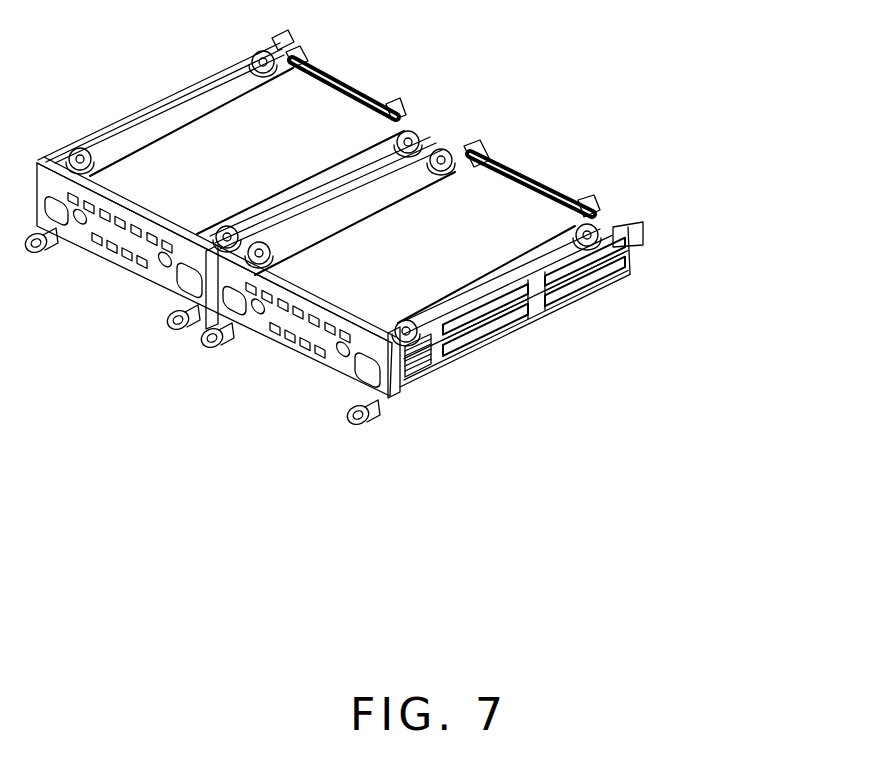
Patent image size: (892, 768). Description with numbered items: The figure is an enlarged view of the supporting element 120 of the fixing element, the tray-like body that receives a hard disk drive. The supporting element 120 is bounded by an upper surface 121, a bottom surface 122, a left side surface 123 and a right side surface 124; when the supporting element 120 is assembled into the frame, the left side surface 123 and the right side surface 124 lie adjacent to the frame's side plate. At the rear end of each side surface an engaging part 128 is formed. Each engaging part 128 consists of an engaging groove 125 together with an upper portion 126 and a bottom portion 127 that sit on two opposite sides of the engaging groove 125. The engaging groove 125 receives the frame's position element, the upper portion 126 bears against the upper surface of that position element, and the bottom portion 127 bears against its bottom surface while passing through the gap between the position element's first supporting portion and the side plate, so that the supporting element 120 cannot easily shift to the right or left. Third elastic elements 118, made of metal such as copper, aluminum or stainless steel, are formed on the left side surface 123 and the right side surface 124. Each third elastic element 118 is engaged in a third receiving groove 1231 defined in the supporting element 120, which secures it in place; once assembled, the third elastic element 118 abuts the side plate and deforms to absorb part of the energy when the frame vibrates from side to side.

The supporting element 120 is at (137, 66).
The upper surface 121 is at (497, 193).
The bottom surface 122 is at (303, 363).
The left side surface 123 is at (433, 378).
The third receiving groove 1231 is at (402, 410).
The third elastic element 118 is at (412, 396).
The right side surface 124 is at (398, 162).
The engaging groove 125 is at (636, 256).
The upper portion 126 is at (634, 245).
The bottom portion 127 is at (636, 268).
The engaging part 128 is at (715, 240).